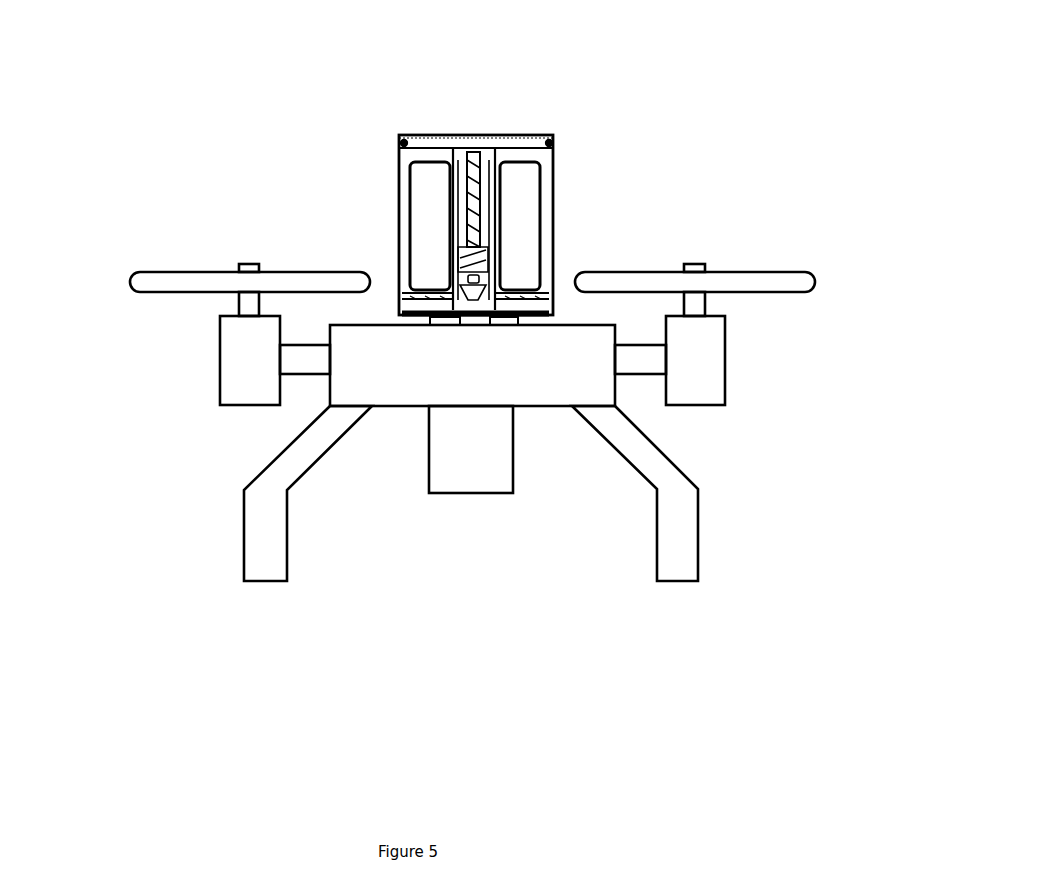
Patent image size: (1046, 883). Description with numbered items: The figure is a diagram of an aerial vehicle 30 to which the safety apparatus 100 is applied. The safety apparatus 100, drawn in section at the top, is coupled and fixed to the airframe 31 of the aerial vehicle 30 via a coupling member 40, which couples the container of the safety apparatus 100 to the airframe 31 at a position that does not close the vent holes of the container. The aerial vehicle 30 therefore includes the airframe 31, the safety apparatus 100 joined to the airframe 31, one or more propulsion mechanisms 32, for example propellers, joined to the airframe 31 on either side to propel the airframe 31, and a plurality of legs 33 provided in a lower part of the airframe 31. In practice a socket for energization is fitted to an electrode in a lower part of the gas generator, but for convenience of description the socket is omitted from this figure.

The safety apparatus 100 is at (550, 112).
The aerial vehicle 30 is at (470, 517).
The airframe 31 is at (410, 385).
The propulsion mechanism 32 is at (165, 282).
The leg 33 is at (273, 562).
The coupling member 40 is at (500, 318).